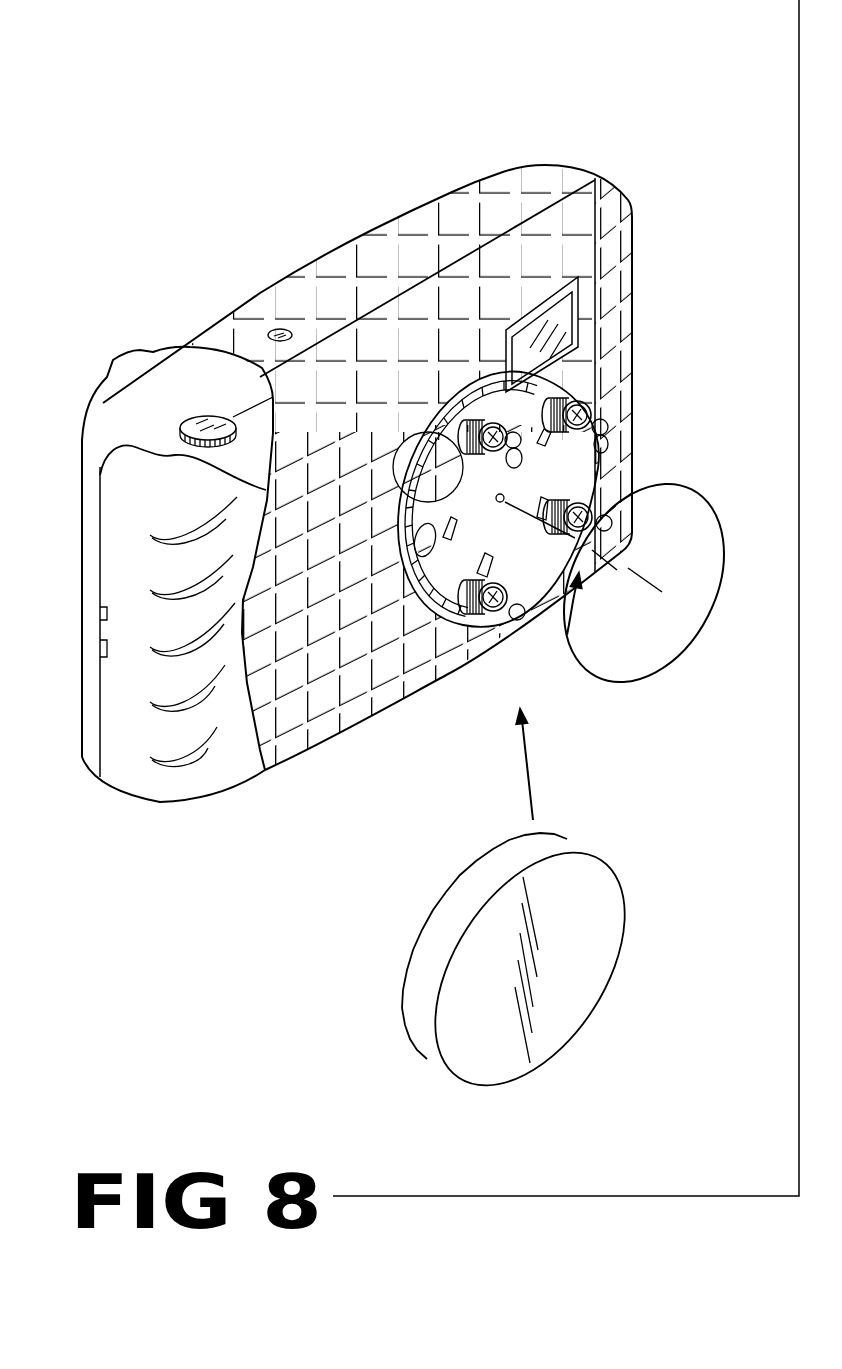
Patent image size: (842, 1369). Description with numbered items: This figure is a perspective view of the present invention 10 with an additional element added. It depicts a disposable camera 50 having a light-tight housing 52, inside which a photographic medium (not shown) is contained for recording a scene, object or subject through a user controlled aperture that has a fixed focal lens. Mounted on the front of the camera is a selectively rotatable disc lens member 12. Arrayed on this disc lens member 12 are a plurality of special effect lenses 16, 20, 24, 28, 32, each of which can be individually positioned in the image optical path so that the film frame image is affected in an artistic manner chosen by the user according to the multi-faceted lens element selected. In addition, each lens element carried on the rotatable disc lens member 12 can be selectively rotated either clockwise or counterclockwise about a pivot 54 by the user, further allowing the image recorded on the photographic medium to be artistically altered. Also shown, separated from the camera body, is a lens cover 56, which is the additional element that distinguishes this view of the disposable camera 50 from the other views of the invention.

The present invention 10 is at (645, 213).
The selectively rotatable disc lens member 12 is at (535, 392).
The special effect lens 16 is at (428, 548).
The special effect lens 20 is at (518, 444).
The special effect lens 24 is at (603, 412).
The special effect lens 28 is at (602, 527).
The special effect lens 32 is at (496, 608).
The disposable camera 50 is at (413, 227).
The light-tight housing 52 is at (542, 180).
The pivot 54 is at (496, 494).
The lens cover 56 is at (463, 1032).